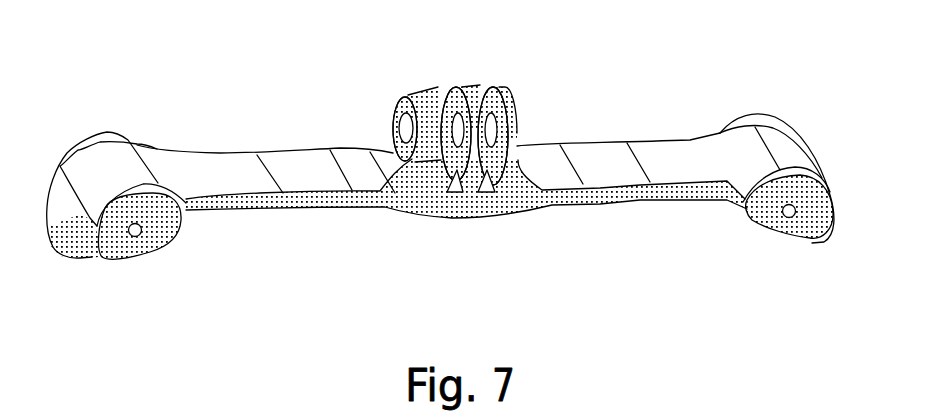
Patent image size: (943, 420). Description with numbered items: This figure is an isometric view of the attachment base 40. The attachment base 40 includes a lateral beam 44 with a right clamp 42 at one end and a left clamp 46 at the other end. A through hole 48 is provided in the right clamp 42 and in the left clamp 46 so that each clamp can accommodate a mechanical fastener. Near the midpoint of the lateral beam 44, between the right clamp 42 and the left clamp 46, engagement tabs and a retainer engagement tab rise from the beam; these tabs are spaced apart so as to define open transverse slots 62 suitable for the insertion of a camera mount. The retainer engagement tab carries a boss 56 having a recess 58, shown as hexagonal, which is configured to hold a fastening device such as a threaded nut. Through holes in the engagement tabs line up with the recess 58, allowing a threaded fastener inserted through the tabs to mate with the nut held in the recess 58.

The attachment base 40 is at (443, 168).
The right clamp 42 is at (86, 270).
The lateral beam 44 is at (601, 160).
The left clamp 46 is at (751, 224).
The through hole 48 is at (139, 233).
The boss 56 is at (379, 101).
The recess 58 is at (396, 126).
The open transverse slots 62 is at (452, 88).